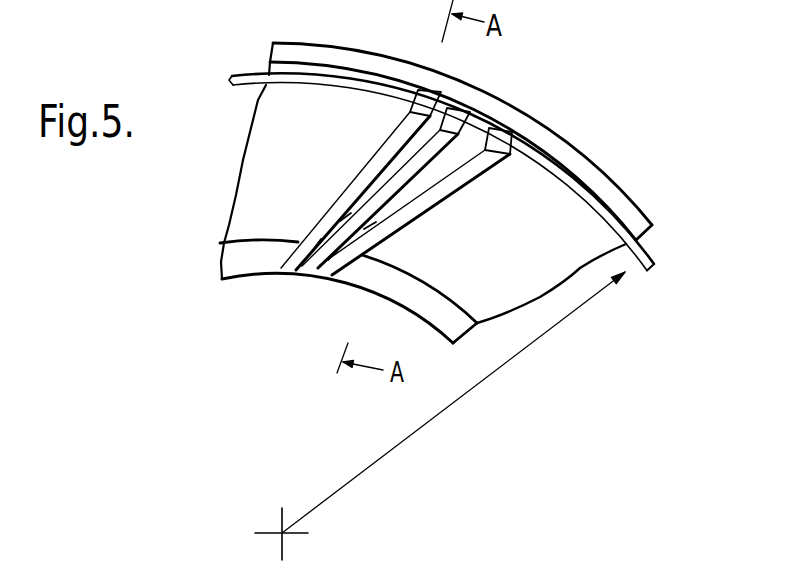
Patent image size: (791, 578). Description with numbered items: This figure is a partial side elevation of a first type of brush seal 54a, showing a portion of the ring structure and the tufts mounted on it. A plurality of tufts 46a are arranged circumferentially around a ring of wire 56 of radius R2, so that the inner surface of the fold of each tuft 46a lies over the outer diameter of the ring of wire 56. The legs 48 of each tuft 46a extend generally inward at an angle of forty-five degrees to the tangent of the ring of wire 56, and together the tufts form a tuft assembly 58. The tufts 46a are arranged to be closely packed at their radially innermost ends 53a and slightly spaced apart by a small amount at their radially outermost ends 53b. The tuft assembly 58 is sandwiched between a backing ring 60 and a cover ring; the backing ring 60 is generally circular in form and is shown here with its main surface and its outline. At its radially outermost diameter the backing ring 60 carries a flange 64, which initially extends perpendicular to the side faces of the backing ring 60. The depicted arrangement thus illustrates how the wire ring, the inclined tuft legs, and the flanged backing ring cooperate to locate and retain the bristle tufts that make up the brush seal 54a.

The backing ring 60 is at (253, 120).
The brush seal 54a is at (532, 102).
The flange 64 is at (628, 208).
The ring of wire 56 is at (650, 270).
The tuft assembly 58 is at (297, 273).
The radially outermost ends 53b is at (452, 117).
The legs 48 is at (441, 188).
The tuft 46a is at (513, 148).
The radially innermost ends 53a is at (323, 277).
The radius R2 is at (440, 416).